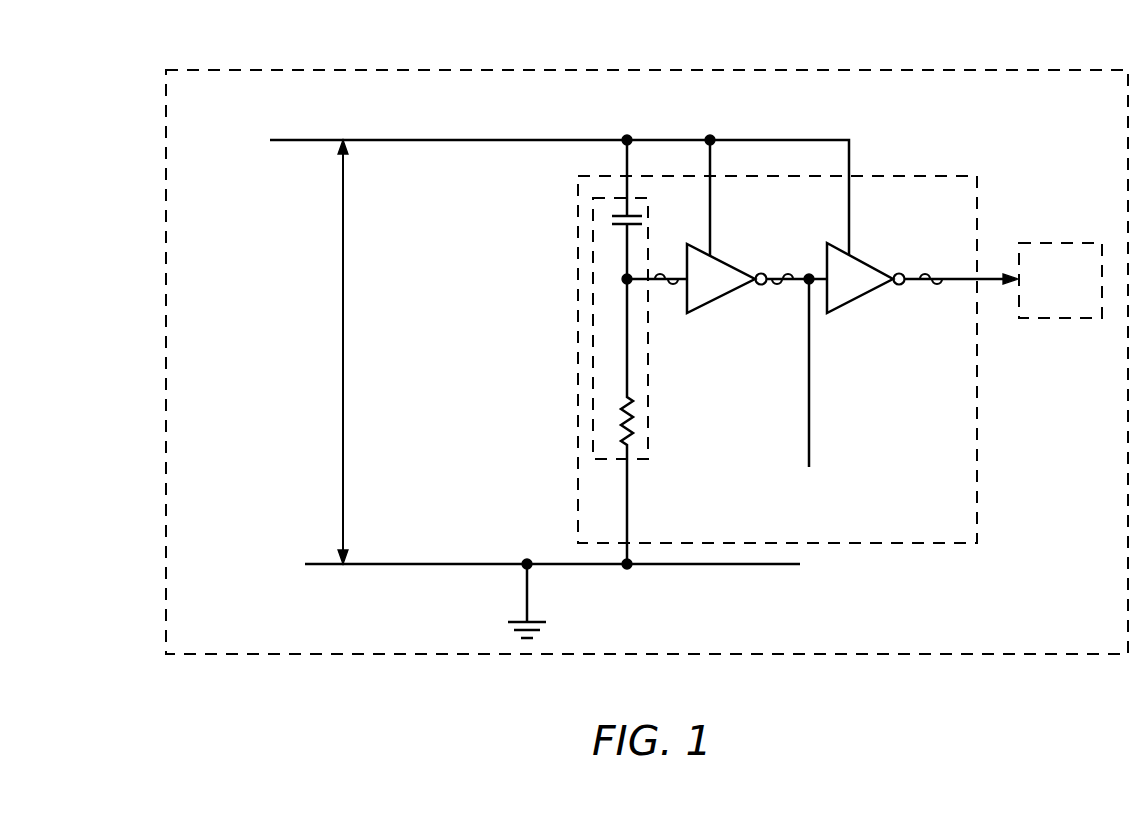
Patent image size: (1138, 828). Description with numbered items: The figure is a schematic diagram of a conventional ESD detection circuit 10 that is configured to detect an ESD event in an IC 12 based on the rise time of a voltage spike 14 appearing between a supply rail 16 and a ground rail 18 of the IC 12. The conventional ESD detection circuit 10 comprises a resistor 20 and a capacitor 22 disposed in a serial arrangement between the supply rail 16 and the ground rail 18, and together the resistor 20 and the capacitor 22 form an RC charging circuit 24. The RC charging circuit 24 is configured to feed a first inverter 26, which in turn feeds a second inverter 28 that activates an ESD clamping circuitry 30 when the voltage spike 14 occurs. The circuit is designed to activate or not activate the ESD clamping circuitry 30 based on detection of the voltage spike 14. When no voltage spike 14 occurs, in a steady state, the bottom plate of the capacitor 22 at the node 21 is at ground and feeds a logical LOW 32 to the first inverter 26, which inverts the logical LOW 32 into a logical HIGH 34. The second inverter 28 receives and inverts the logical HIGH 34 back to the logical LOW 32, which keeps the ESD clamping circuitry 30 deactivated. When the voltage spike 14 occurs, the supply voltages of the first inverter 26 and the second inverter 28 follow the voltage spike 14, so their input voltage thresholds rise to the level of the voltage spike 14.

The conventional ESD detection circuit 10 is at (925, 176).
The integrated circuit 12 is at (1088, 70).
The voltage spike 14 is at (348, 287).
The supply rail 16 is at (467, 140).
The ground rail 18 is at (416, 567).
The resistor 20 is at (625, 404).
The node 21 is at (622, 228).
The capacitor 22 is at (608, 222).
The RC charging circuit 24 is at (648, 392).
The first inverter 26 is at (731, 266).
The second inverter 28 is at (872, 267).
The ESD clamping circuitry 30 is at (1062, 243).
The logical LOW 32 is at (673, 284).
The logical HIGH 34 is at (660, 274).